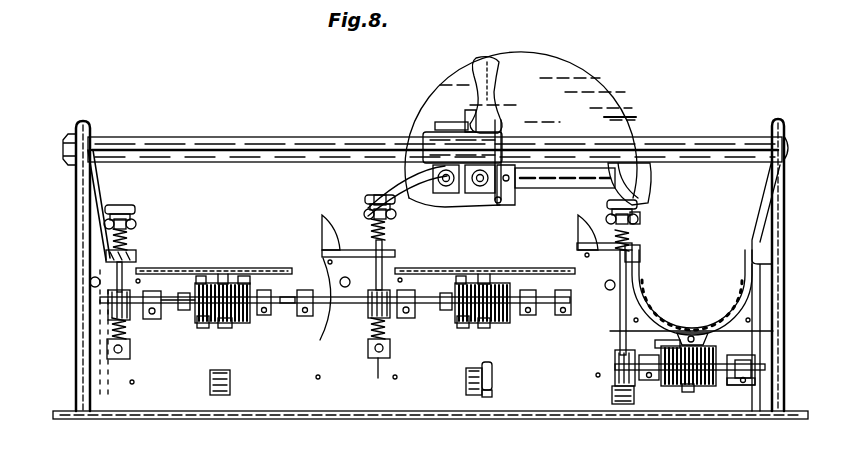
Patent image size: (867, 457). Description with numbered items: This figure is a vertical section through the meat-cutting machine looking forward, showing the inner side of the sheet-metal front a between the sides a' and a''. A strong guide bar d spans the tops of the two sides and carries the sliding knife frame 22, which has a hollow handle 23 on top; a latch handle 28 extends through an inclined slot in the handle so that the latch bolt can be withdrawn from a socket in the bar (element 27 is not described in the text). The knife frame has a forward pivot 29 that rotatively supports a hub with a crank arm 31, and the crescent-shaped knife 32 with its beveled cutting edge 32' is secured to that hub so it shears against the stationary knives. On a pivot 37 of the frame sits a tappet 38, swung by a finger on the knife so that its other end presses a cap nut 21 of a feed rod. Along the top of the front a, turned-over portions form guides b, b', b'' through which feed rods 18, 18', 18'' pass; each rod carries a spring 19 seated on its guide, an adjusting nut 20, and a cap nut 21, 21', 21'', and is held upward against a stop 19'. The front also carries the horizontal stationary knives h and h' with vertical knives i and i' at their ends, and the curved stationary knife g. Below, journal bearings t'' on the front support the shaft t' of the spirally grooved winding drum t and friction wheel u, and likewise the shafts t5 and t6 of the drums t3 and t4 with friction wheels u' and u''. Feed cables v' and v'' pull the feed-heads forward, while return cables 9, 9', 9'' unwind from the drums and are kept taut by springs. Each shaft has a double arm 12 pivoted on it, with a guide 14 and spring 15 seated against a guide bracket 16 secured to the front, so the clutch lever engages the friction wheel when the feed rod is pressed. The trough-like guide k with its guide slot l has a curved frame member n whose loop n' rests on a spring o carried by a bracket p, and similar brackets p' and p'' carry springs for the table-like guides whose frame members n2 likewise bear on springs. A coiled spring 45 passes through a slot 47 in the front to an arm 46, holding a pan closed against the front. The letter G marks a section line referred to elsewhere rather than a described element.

The front a is at (430, 430).
The side a' is at (783, 265).
The side a'' is at (71, 266).
The guide bar d is at (299, 146).
The knife 32 is at (537, 128).
The beveled cutting edge 32' is at (642, 111).
The hollow handle 23 is at (474, 80).
The knife frame 22 is at (500, 160).
The latch handle 28 is at (443, 124).
The handle base 27 is at (468, 118).
The tappet 38 is at (413, 196).
The pivot 37 is at (470, 200).
The pivot 29 is at (505, 205).
The crank arm 31 is at (552, 190).
The cap nut 21'' is at (121, 198).
The spring 19 is at (397, 226).
The stop 19' is at (407, 248).
The guide b'' is at (213, 244).
The feed rod 18'' is at (76, 273).
The friction wheel u'' is at (165, 296).
The double arm 12 is at (108, 311).
The guide 14 is at (128, 360).
The shaft t6 is at (172, 304).
The winding drum t4 is at (205, 326).
The cable 9'' is at (232, 318).
The bracket p'' is at (219, 336).
The cable v'' is at (186, 264).
The horizontal stationary knife h' is at (217, 264).
The loop n' is at (526, 294).
The coiled spring 45 is at (232, 389).
The vertical knife i' is at (319, 223).
The guide b' is at (336, 245).
The cap nut 21' is at (359, 195).
The frame G is at (378, 196).
The spring 15 is at (369, 326).
The feed rod 18' is at (362, 265).
The friction wheel u' is at (425, 304).
The guide bracket 16 is at (368, 344).
The shaft t5 is at (428, 304).
The winding drum t3 is at (465, 326).
The cable 9' is at (505, 323).
The bracket p' is at (479, 337).
The cable v' is at (448, 262).
The horizontal stationary knife h is at (485, 260).
The frame member n2 is at (524, 267).
The arm 46 is at (466, 386).
The slot 47 is at (492, 366).
The cap nut 21 is at (603, 205).
The adjusting nut 20 is at (640, 219).
The vertical knife i is at (576, 232).
The guide b is at (604, 268).
The feed rod 18 is at (603, 302).
The trough-like guide k is at (654, 320).
The guide slot l is at (684, 332).
The curved stationary knife g is at (691, 333).
The curved frame member n is at (637, 326).
The spring o is at (658, 344).
The friction wheel u is at (669, 366).
The cable 9 is at (681, 376).
The bracket p is at (705, 410).
The winding drum t is at (766, 364).
The journal bearing t'' is at (773, 378).
The shaft t' is at (748, 408).